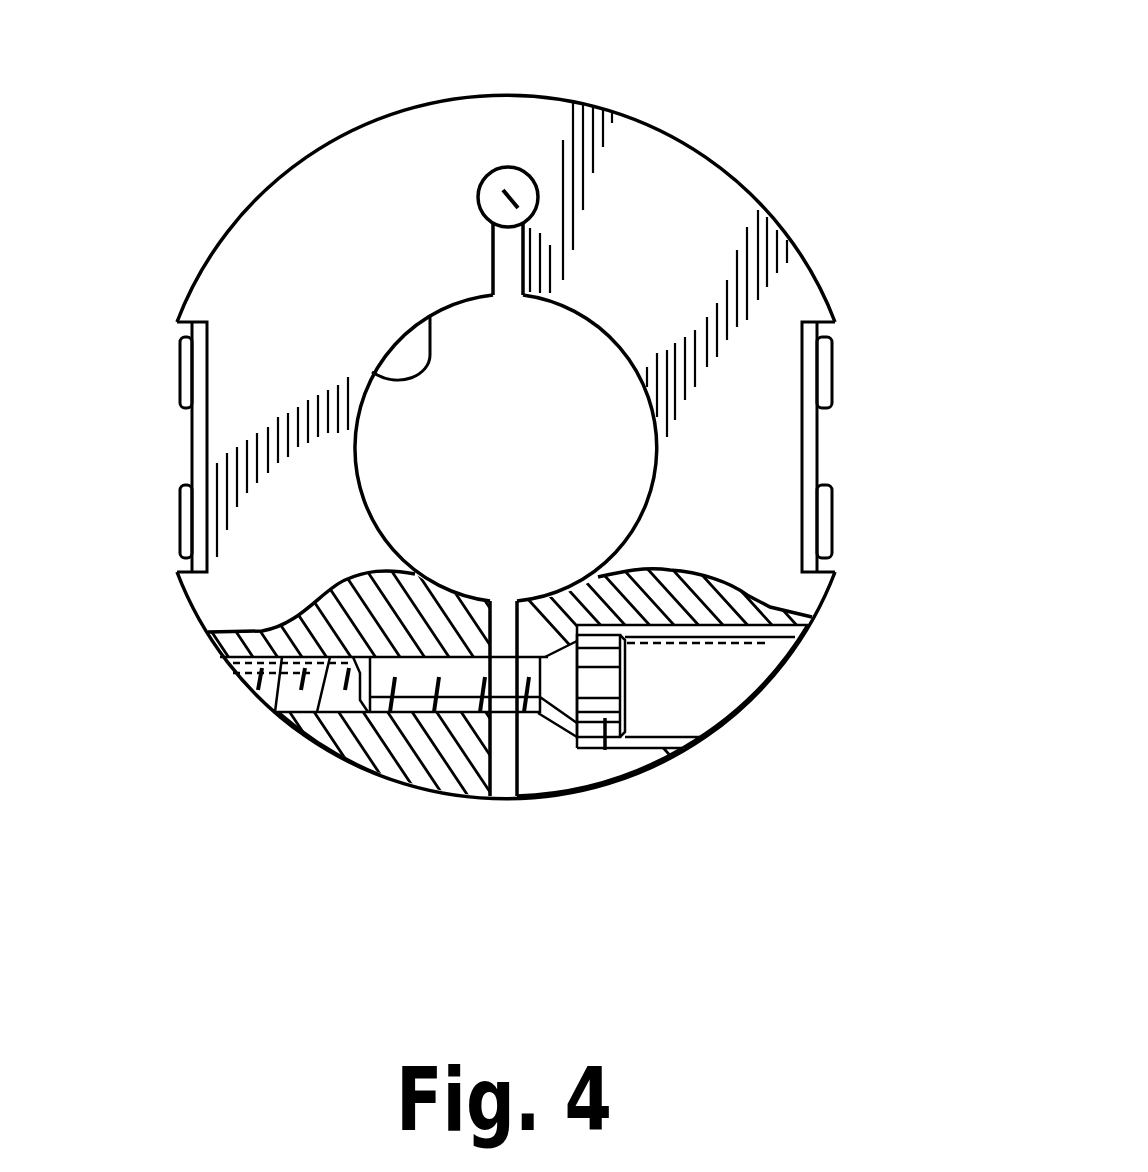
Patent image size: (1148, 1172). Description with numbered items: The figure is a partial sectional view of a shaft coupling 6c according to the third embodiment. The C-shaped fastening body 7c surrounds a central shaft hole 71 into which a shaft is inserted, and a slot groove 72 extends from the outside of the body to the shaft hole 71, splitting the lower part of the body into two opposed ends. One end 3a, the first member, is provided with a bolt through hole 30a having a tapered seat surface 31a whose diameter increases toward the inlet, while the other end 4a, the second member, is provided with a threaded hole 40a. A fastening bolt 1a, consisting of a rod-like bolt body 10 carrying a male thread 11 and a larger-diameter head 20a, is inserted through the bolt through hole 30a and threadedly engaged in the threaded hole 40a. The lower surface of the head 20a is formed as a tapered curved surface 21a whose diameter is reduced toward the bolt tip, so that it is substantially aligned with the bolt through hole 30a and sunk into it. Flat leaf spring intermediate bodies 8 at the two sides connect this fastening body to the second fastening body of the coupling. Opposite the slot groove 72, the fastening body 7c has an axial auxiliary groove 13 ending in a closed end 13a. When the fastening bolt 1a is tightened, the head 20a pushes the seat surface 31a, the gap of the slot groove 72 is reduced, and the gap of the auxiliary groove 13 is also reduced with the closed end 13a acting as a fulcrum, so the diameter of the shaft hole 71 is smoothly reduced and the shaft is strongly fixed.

The shaft coupling 6c is at (668, 108).
The fastening body 7c is at (723, 200).
The closed end 13a is at (542, 247).
The auxiliary groove 13 is at (503, 293).
The shaft hole 71 is at (370, 376).
The leaf spring intermediate body 8 is at (192, 432).
The threaded hole 40a is at (256, 668).
The bolt body 10 is at (300, 720).
The male thread 11 is at (380, 775).
The other end 4a is at (438, 768).
The slot groove 72 is at (500, 798).
The tapered curved surface 21a is at (554, 795).
The one end 3a is at (585, 773).
The head 20a is at (575, 778).
The fastening bolt 1a is at (645, 707).
The tapered seat surface 31a is at (626, 664).
The bolt through hole 30a is at (768, 650).